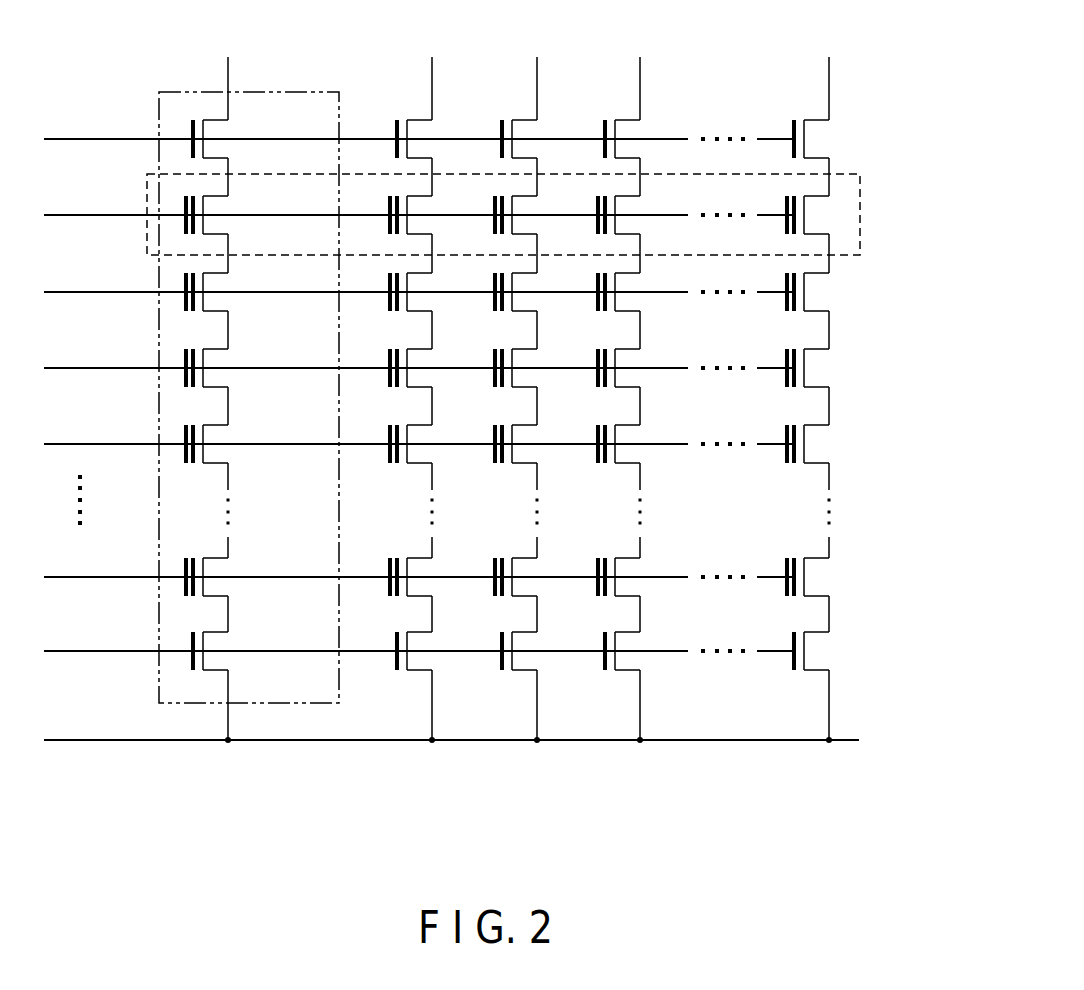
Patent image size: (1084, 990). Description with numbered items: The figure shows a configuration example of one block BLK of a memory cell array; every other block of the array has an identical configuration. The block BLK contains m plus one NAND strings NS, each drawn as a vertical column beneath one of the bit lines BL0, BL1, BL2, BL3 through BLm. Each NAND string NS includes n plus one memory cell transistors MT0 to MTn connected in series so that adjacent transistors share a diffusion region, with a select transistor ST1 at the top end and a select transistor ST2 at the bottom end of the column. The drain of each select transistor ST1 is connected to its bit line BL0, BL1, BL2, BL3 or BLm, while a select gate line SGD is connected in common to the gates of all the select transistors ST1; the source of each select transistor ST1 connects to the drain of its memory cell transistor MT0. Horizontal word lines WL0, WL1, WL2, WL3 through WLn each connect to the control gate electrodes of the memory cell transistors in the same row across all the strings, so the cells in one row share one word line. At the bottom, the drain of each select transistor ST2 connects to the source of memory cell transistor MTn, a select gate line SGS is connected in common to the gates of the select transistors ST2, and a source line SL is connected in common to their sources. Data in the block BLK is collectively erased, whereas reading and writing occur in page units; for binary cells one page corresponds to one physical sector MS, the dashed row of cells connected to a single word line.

The block BLK is at (499, 423).
The NAND string NS is at (178, 90).
The physical sector MS is at (860, 196).
The select transistor ST1 is at (222, 129).
The select transistor ST2 is at (222, 642).
The memory cell transistor MT0 is at (222, 206).
The memory cell transistor MTn is at (222, 568).
The bit line BL0 is at (228, 385).
The bit line BL1 is at (433, 385).
The bit line BL2 is at (537, 385).
The bit line BL3 is at (640, 385).
The bit line BLm is at (830, 385).
The select gate line SGD is at (418, 124).
The select gate line SGS is at (418, 636).
The word line WL0 is at (418, 200).
The word line WL1 is at (418, 277).
The word line WL2 is at (418, 353).
The word line WL3 is at (418, 429).
The word line WLn is at (418, 562).
The source line SL is at (451, 724).